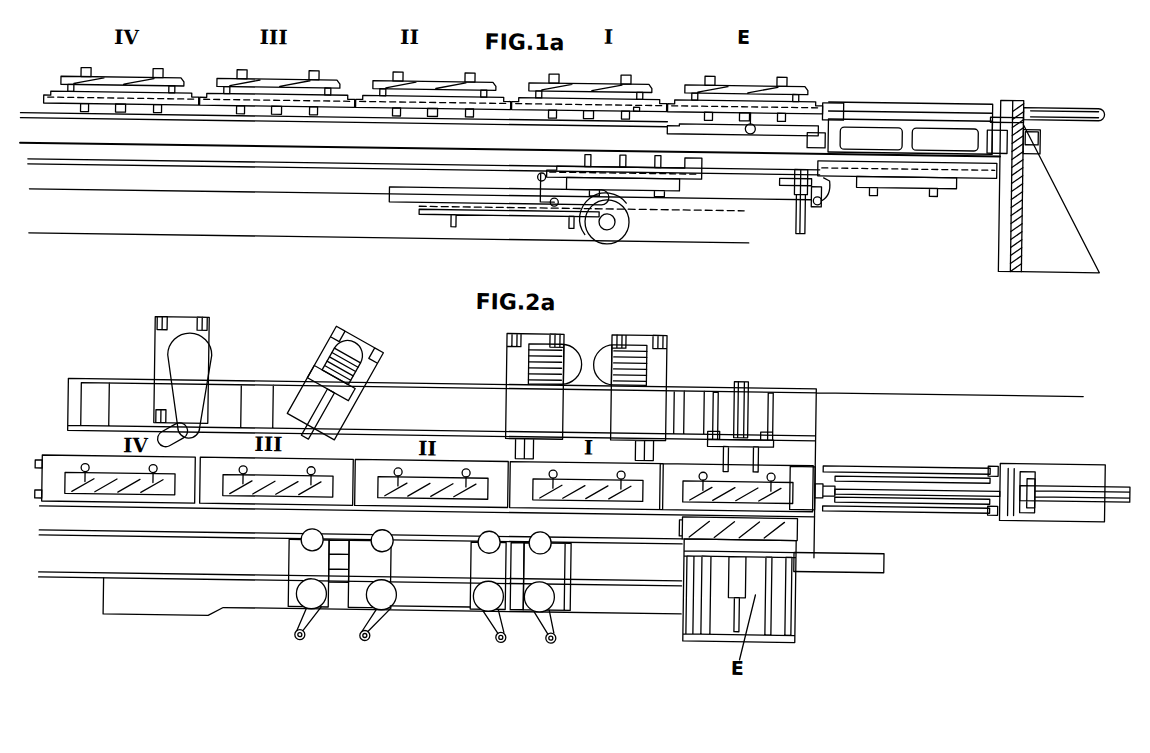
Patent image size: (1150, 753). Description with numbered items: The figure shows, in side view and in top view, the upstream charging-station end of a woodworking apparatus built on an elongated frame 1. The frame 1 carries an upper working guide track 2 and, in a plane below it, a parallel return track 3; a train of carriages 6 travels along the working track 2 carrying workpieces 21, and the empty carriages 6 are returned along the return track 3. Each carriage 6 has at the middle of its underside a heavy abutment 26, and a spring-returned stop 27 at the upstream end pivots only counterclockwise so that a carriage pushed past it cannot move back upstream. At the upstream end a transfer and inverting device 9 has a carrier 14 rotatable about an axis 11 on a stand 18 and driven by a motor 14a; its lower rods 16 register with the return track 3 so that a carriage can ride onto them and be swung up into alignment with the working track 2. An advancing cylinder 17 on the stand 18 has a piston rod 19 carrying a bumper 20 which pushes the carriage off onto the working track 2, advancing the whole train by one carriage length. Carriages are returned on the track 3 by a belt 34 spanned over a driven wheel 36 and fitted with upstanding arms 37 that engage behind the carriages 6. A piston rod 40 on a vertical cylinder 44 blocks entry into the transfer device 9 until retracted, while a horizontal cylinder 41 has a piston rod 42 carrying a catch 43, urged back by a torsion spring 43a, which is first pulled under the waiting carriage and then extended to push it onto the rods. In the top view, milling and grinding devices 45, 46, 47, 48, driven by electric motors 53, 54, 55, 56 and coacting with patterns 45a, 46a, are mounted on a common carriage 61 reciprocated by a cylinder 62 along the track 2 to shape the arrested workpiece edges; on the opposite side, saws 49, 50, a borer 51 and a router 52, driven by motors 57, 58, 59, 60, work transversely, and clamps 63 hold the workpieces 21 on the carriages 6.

In FIG. 1a, the frame 1 is at (315, 134).
In FIG. 2a, the frame 1 is at (405, 417).
In FIG. 1a, the upper working guide track 2 is at (636, 107).
In FIG. 1a, the return track 3 is at (285, 149).
In FIG. 1a, the carriage 6 is at (522, 102).
In FIG. 2a, the carriage 6 is at (263, 502).
In FIG. 1a, the transfer and inverting device 9 is at (880, 131).
In FIG. 1a, the axis 11 is at (848, 127).
In FIG. 1a, the carrier 14 is at (985, 125).
In FIG. 1a, the motor 14a is at (1035, 133).
In FIG. 1a, the lower rods 16 is at (965, 175).
In FIG. 1a, the advancing cylinder 17 is at (1050, 103).
In FIG. 2a, the advancing cylinder 17 is at (1060, 486).
In FIG. 1a, the stand 18 is at (1048, 171).
In FIG. 2a, the stand 18 is at (1008, 454).
In FIG. 1a, the piston rod 19 is at (915, 108).
In FIG. 2a, the piston rod 19 is at (910, 483).
In FIG. 1a, the bumper 20 is at (834, 104).
In FIG. 2a, the bumper 20 is at (830, 485).
In FIG. 1a, the workpiece 21 is at (585, 80).
In FIG. 2a, the workpiece 21 is at (110, 484).
In FIG. 1a, the abutment 26 is at (118, 109).
In FIG. 1a, the stop 27 is at (750, 115).
In FIG. 1a, the belt 34 is at (290, 166).
In FIG. 1a, the driven wheel 36 is at (618, 226).
In FIG. 1a, the upstanding arm 37 is at (538, 180).
In FIG. 1a, the piston rod 40 is at (783, 178).
In FIG. 1a, the cylinder 41 is at (432, 190).
In FIG. 1a, the piston rod 42 is at (733, 198).
In FIG. 1a, the catch 43 is at (818, 200).
In FIG. 1a, the torsion spring 43a is at (813, 205).
In FIG. 1a, the vertical cylinder 44 is at (800, 222).
In FIG. 2a, the milling and grinding device 45 is at (522, 610).
In FIG. 2a, the pattern 45a is at (445, 606).
In FIG. 2a, the milling and grinding device 46 is at (485, 564).
In FIG. 2a, the pattern 46a is at (262, 610).
In FIG. 2a, the milling and grinding device 47 is at (350, 623).
In FIG. 2a, the milling and grinding device 48 is at (310, 572).
In FIG. 2a, the saw 49 is at (632, 397).
In FIG. 2a, the saw 50 is at (535, 399).
In FIG. 2a, the borer 51 is at (315, 402).
In FIG. 2a, the router 52 is at (190, 427).
In FIG. 2a, the electric motor 53 is at (535, 565).
In FIG. 2a, the electric motor 54 is at (500, 595).
In FIG. 2a, the electric motor 55 is at (385, 602).
In FIG. 2a, the electric motor 56 is at (313, 598).
In FIG. 2a, the electric motor 57 is at (625, 352).
In FIG. 2a, the electric motor 58 is at (552, 353).
In FIG. 2a, the electric motor 59 is at (345, 346).
In FIG. 2a, the electric motor 60 is at (183, 363).
In FIG. 2a, the common carriage 61 is at (568, 595).
In FIG. 2a, the cylinder 62 is at (862, 566).
In FIG. 1a, the clamp 63 is at (162, 79).
In FIG. 2a, the clamp 63 is at (775, 467).